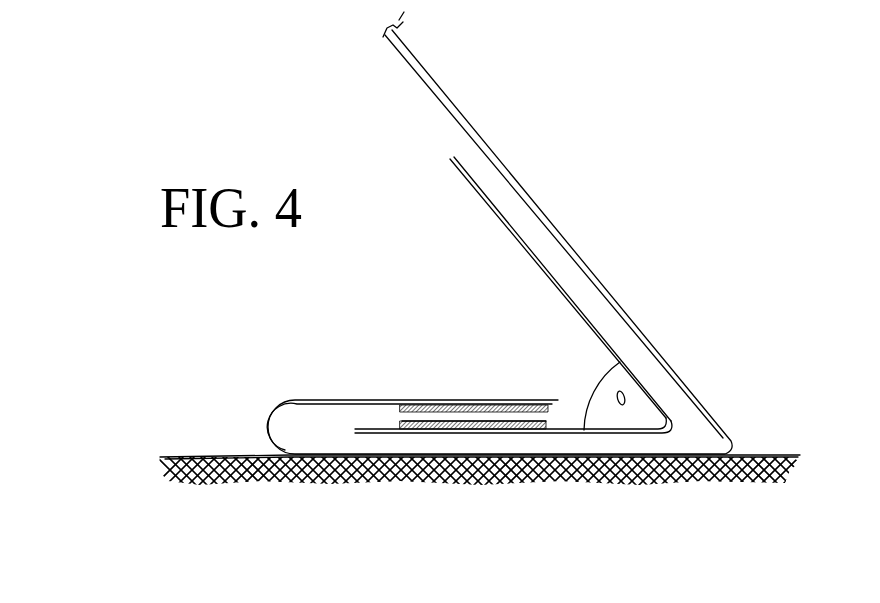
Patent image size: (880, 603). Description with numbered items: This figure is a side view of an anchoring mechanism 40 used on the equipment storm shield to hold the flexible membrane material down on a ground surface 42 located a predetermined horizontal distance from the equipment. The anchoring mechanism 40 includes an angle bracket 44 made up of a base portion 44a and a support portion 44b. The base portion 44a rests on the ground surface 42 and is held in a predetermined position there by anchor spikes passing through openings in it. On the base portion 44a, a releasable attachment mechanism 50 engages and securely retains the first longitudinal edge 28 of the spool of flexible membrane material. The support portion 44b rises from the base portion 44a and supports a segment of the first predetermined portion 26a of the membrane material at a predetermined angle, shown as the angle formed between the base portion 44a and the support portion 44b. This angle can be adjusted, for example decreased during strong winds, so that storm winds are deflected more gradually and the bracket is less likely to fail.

The first predetermined portion of the flexible membrane material 26a is at (453, 100).
The first longitudinal edge of the spool of flexible membrane material 28 is at (560, 402).
The anchoring mechanism 40 is at (530, 271).
The ground surface 42 is at (160, 473).
The angle bracket 44 is at (672, 421).
The base portion 44a is at (557, 433).
The support portion 44b is at (497, 209).
The releasable attachment mechanism 50 is at (395, 425).